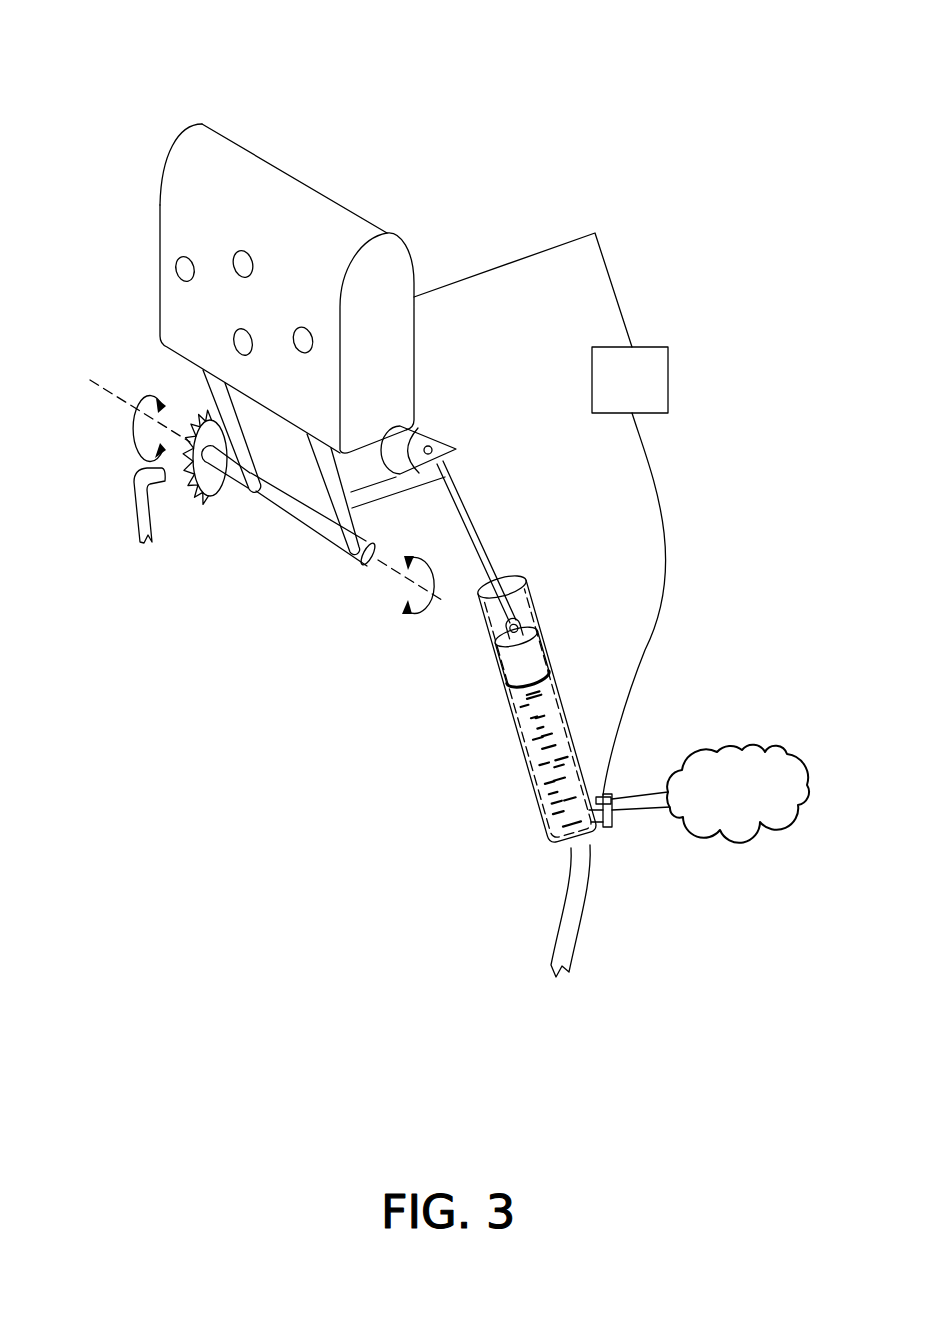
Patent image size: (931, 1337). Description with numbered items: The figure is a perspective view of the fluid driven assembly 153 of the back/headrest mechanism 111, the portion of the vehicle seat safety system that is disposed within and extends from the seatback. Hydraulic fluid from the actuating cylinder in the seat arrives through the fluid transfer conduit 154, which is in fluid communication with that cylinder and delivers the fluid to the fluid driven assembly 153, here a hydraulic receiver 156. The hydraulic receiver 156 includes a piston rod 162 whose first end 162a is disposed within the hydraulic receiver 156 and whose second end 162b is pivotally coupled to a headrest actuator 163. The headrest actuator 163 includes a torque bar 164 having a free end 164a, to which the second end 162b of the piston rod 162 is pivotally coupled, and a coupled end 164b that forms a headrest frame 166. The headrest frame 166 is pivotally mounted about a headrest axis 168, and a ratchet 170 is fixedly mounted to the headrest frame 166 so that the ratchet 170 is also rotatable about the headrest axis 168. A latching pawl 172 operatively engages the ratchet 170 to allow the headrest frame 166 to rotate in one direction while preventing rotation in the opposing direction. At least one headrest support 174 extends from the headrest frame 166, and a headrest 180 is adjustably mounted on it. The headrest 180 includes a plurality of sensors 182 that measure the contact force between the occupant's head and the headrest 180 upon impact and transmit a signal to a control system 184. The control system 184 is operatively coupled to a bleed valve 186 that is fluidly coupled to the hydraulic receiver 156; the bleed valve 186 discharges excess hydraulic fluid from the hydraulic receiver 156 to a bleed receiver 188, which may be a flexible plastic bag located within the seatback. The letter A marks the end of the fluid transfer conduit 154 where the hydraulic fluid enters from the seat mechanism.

The back/headrest mechanism 111 is at (409, 128).
The headrest 180 is at (242, 172).
The sensors 182 is at (305, 332).
The control system 184 is at (648, 379).
The headrest axis 168 is at (115, 400).
The ratchet 170 is at (213, 482).
The latching pawl 172 is at (133, 507).
The headrest frame 166 is at (248, 490).
The headrest support 174 is at (343, 527).
The headrest actuator 163 is at (327, 530).
The torque bar 164 is at (382, 480).
The free end 164a is at (433, 447).
The coupled end 164b is at (300, 510).
The piston rod 162 is at (490, 571).
The first end 162a is at (530, 660).
The second end 162b is at (431, 446).
The fluid driven assembly 153 is at (517, 740).
The hydraulic receiver 156 is at (570, 828).
The fluid transfer conduit 154 is at (565, 928).
The bleed valve 186 is at (608, 797).
The bleed receiver 188 is at (780, 760).
The flow direction A is at (562, 978).